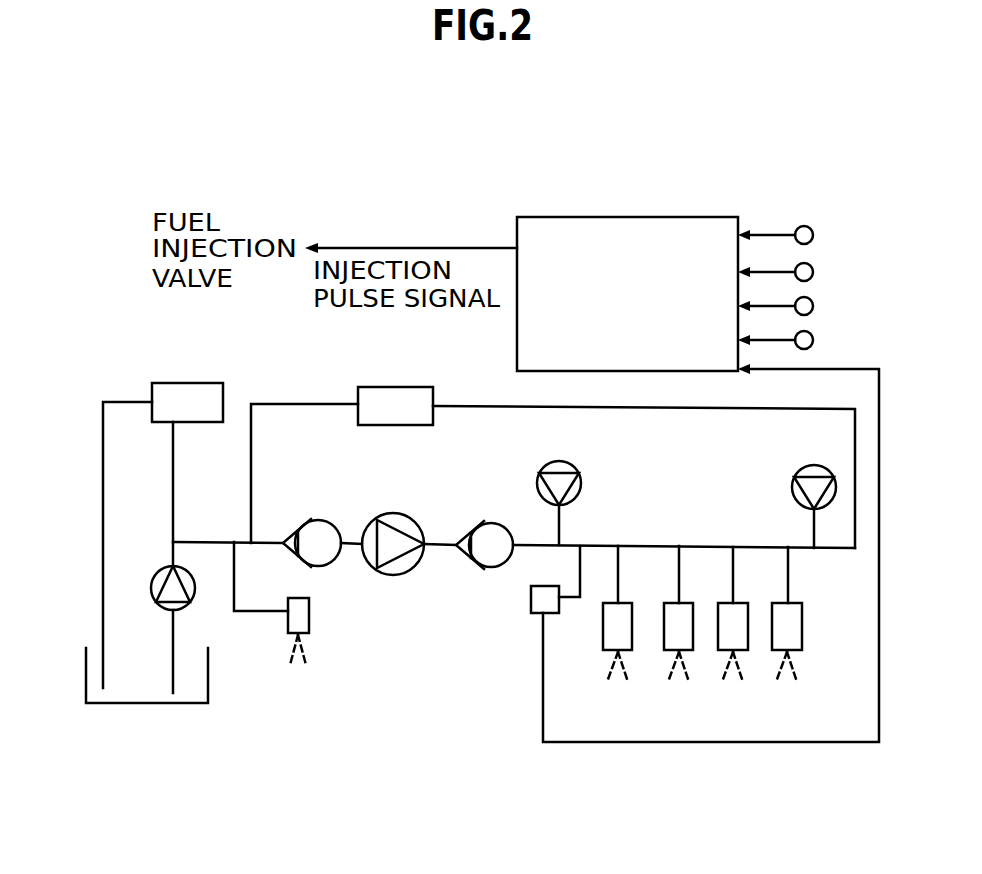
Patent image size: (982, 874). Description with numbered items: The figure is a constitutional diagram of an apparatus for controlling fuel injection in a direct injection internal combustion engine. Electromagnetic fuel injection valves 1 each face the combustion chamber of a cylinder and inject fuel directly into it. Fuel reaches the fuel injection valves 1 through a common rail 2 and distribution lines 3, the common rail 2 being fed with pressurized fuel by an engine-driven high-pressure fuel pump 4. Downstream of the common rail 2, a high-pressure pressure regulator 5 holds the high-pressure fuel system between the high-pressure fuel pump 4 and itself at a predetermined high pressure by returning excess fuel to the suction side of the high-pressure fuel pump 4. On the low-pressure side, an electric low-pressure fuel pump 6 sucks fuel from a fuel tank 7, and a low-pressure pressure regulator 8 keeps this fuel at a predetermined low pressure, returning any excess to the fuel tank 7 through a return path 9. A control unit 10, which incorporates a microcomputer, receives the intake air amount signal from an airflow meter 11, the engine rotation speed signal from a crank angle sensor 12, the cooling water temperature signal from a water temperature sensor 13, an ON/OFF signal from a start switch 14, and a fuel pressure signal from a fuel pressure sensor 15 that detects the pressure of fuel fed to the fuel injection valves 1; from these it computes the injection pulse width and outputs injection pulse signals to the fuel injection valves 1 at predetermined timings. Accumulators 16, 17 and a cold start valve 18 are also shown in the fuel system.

The fuel injection valve 1 is at (802, 638).
The common rail 2 is at (710, 547).
The distribution line 3 is at (788, 596).
The high-pressure fuel pump 4 is at (412, 568).
The high-pressure pressure regulator 5 is at (398, 387).
The low-pressure fuel pump 6 is at (160, 605).
The fuel tank 7 is at (208, 680).
The low-pressure pressure regulator 8 is at (199, 383).
The return path 9 is at (103, 505).
The control unit 10 is at (638, 216).
The airflow meter 11 is at (810, 228).
The crank angle sensor 12 is at (811, 266).
The water temperature sensor 13 is at (813, 304).
The start switch 14 is at (813, 340).
The fuel pressure sensor 15 is at (533, 614).
The accumulator 16 is at (575, 468).
The accumulator 17 is at (798, 472).
The cold start valve 18 is at (309, 612).